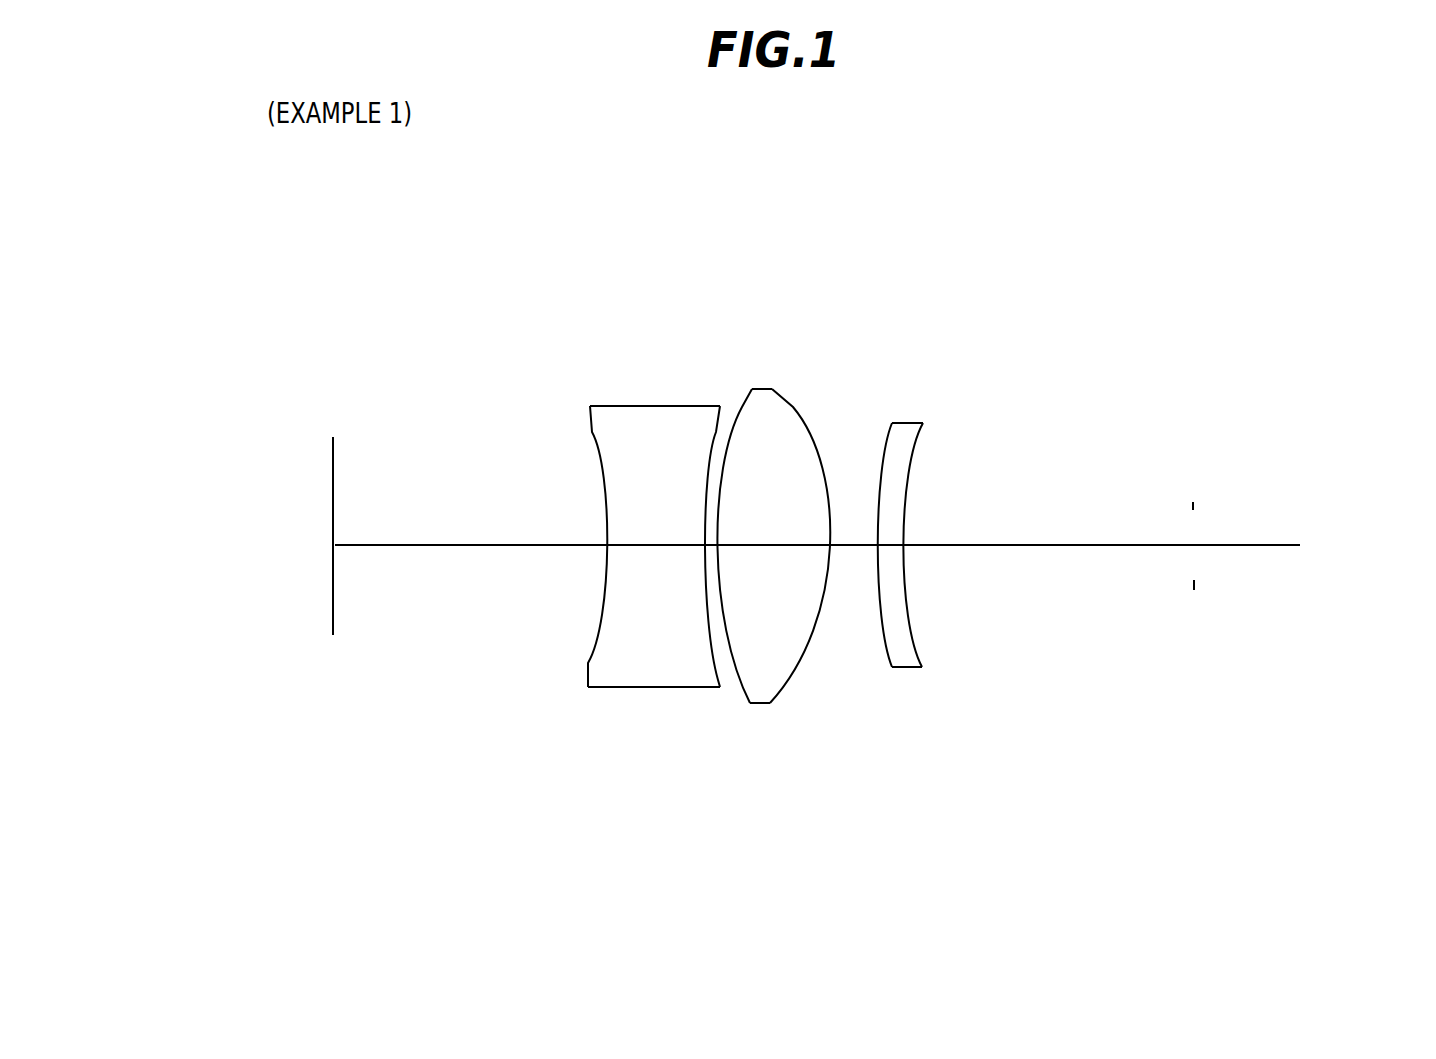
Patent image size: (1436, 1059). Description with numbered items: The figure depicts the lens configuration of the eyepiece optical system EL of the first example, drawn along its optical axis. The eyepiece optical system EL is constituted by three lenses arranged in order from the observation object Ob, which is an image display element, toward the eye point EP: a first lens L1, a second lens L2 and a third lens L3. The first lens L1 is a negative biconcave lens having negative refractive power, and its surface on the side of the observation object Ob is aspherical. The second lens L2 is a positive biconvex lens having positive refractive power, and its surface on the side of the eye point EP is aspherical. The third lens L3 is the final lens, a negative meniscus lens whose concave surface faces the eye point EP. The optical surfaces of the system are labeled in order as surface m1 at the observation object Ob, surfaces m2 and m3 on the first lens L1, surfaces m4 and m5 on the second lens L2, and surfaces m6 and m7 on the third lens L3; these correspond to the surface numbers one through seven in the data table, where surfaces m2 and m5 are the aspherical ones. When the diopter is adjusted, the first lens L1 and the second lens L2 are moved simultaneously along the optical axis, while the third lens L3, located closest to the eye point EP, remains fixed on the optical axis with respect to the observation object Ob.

The eyepiece optical system EL is at (931, 216).
The optical surface m1 is at (335, 432).
The observation object Ob is at (333, 640).
The first lens L1 is at (660, 687).
The optical surface m2 is at (598, 452).
The optical surface m3 is at (716, 432).
The second lens L2 is at (760, 703).
The optical surface m4 is at (745, 406).
The optical surface m5 is at (788, 408).
The third lens L3 is at (908, 667).
The optical surface m6 is at (890, 435).
The optical surface m7 is at (922, 445).
The eye point EP is at (1194, 595).